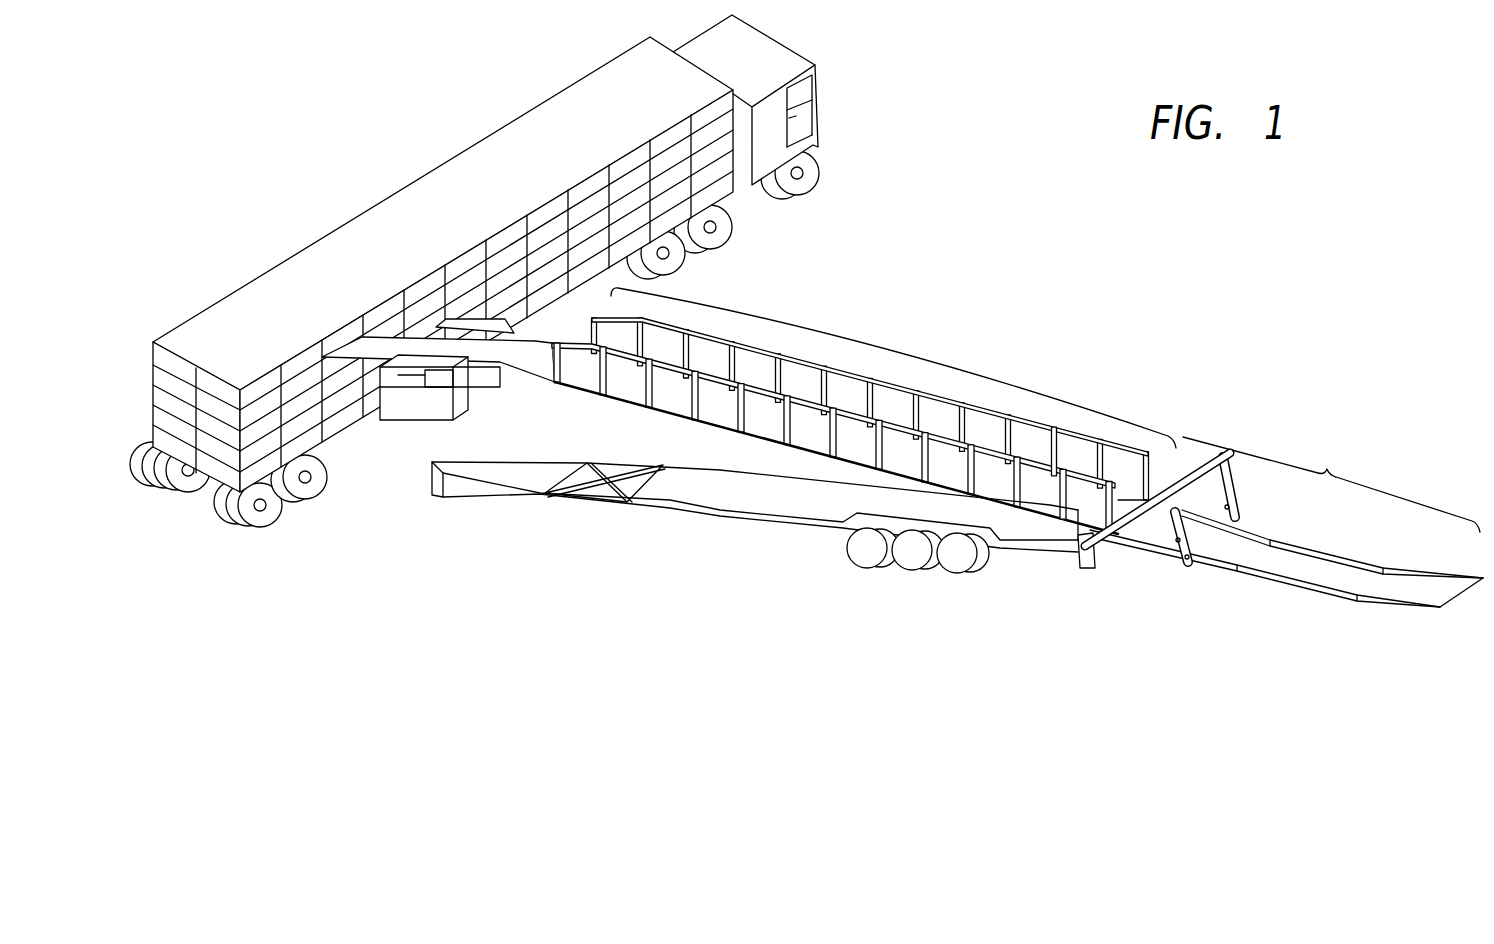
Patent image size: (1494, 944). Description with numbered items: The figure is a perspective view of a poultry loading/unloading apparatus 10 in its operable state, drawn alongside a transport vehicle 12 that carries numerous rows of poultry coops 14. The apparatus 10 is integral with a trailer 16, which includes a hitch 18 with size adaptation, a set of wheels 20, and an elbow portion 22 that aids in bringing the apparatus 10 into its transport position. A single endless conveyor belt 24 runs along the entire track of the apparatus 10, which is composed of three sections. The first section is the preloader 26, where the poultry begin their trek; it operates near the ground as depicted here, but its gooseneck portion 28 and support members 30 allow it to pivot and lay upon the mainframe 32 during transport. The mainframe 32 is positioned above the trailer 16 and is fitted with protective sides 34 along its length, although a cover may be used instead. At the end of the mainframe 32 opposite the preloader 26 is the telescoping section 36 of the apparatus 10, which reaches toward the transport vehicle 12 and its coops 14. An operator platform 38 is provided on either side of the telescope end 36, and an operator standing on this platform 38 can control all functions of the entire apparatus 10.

The poultry loading/unloading apparatus 10 is at (1000, 355).
The transport vehicle 12 is at (435, 150).
The poultry coops 14 is at (351, 328).
The trailer 16 is at (708, 518).
The hitch 18 is at (428, 486).
The wheels 20 is at (963, 573).
The elbow portion 22 is at (582, 505).
The endless conveyor belt 24 is at (540, 352).
The preloader 26 is at (1331, 484).
The gooseneck portion 28 is at (1080, 560).
The support members 30 is at (1108, 553).
The mainframe 32 is at (888, 352).
The protective sides 34 is at (1050, 462).
The telescoping section 36 is at (518, 418).
The operator platform 38 is at (488, 392).